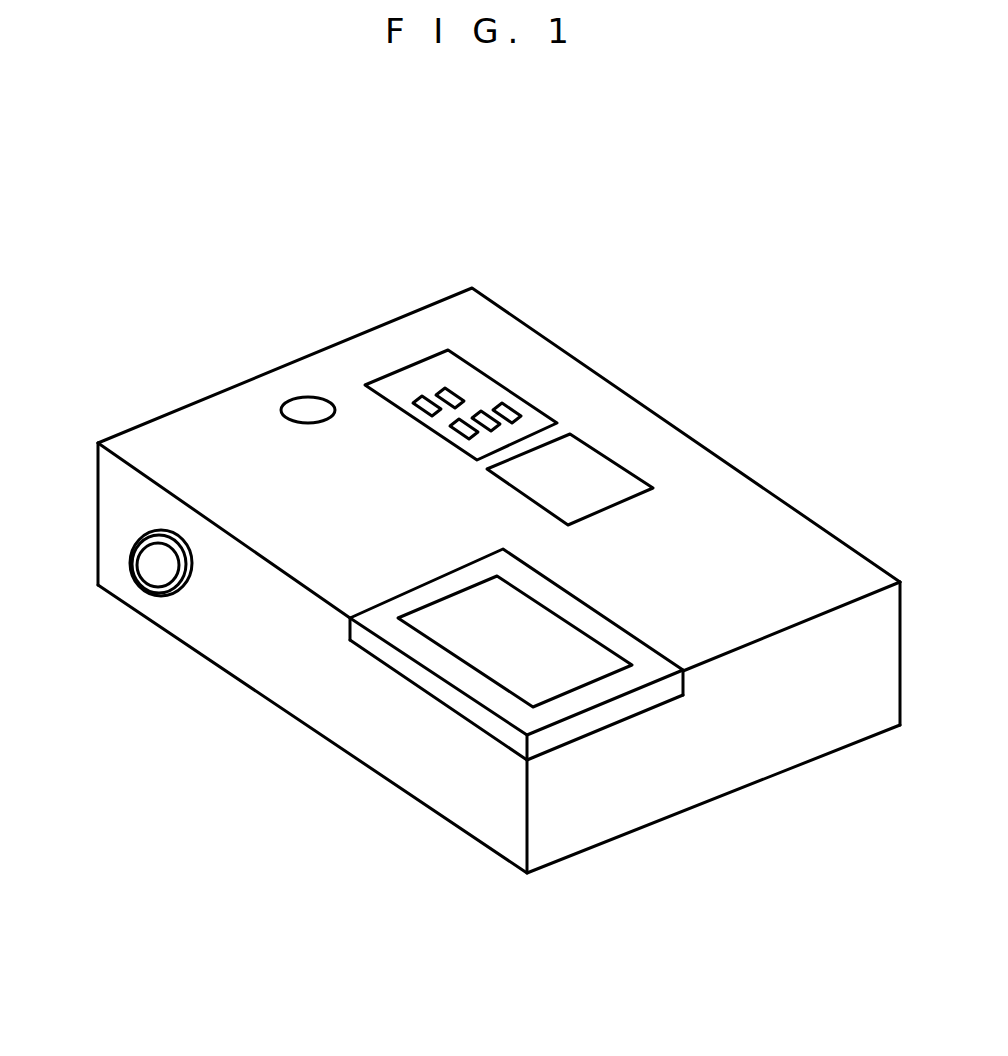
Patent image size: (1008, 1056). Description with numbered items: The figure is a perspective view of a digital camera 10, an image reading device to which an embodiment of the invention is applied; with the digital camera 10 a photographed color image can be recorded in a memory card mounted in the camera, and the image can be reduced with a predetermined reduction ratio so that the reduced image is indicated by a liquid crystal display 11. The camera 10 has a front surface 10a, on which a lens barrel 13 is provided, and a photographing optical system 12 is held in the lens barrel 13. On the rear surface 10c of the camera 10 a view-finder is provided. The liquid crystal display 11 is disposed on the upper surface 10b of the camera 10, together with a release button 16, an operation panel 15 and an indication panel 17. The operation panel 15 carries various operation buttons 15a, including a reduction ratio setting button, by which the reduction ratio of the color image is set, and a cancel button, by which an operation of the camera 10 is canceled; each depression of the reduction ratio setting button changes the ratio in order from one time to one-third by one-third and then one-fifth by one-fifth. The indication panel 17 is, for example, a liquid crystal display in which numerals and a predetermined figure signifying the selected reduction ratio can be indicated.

The digital camera 10 is at (623, 300).
The front surface 10a is at (387, 742).
The upper surface 10b is at (777, 543).
The rear surface 10c is at (727, 458).
The liquid crystal display 11 is at (562, 668).
The photographing optical system 12 is at (156, 567).
The lens barrel 13 is at (138, 588).
The operation panel 15 is at (410, 360).
The operation buttons 15a is at (513, 407).
The release button 16 is at (308, 410).
The indication panel 17 is at (607, 455).